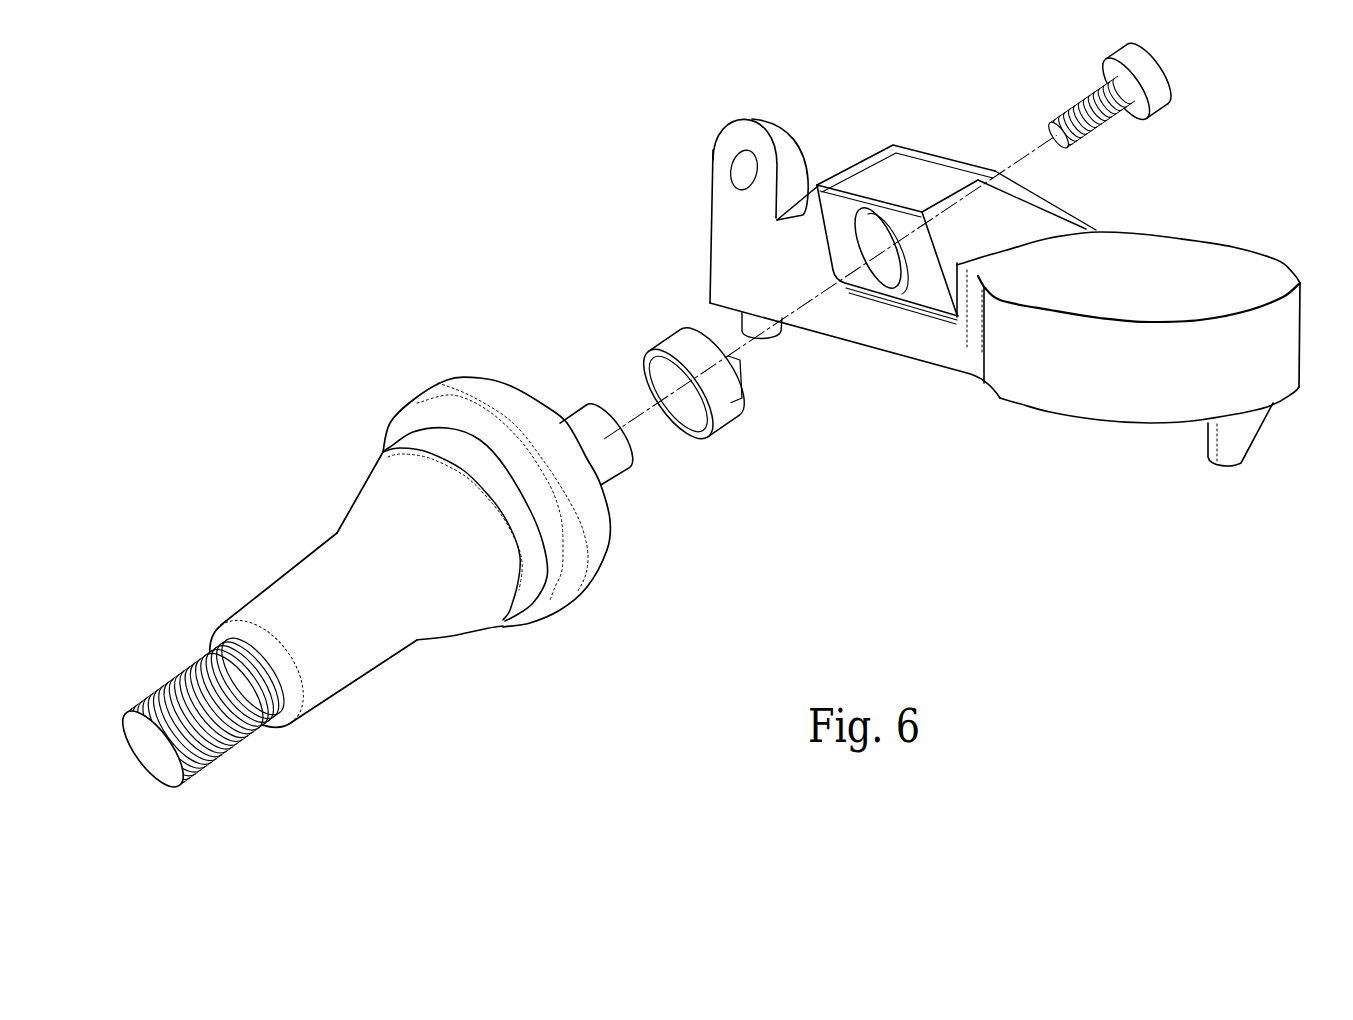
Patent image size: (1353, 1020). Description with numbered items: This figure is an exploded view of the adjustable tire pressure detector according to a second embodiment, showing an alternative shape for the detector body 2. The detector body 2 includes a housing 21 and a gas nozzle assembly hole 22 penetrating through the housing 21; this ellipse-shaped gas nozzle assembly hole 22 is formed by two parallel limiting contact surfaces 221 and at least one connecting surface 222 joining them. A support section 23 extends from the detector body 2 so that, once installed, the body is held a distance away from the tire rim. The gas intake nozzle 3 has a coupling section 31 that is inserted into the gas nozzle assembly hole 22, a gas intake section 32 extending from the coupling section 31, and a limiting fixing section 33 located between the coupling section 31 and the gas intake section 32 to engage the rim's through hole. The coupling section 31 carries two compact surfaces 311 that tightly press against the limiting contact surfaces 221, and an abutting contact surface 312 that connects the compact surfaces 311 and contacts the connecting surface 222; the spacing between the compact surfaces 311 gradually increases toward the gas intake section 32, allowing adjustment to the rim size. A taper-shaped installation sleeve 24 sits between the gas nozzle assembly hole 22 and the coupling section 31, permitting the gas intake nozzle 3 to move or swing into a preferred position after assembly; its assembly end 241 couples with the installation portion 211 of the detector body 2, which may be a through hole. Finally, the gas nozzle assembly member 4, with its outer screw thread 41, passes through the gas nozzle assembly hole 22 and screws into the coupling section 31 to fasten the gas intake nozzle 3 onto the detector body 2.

The detector body 2 is at (1051, 416).
The housing 21 is at (1250, 268).
The installation portion 211 is at (876, 262).
The gas nozzle assembly hole 22 is at (1012, 95).
The limiting contact surface 221 is at (869, 300).
The connecting surface 222 is at (947, 305).
The support section 23 is at (1238, 440).
The installation sleeve 24 is at (717, 393).
The assembly end 241 is at (742, 368).
The gas intake nozzle 3 is at (278, 570).
The coupling section 31 is at (500, 327).
The compact surface 311 is at (599, 440).
The abutting contact surface 312 is at (570, 432).
The gas intake section 32 is at (353, 668).
The limiting fixing section 33 is at (528, 586).
The gas nozzle assembly member 4 is at (1153, 80).
The outer screw thread 41 is at (1103, 128).